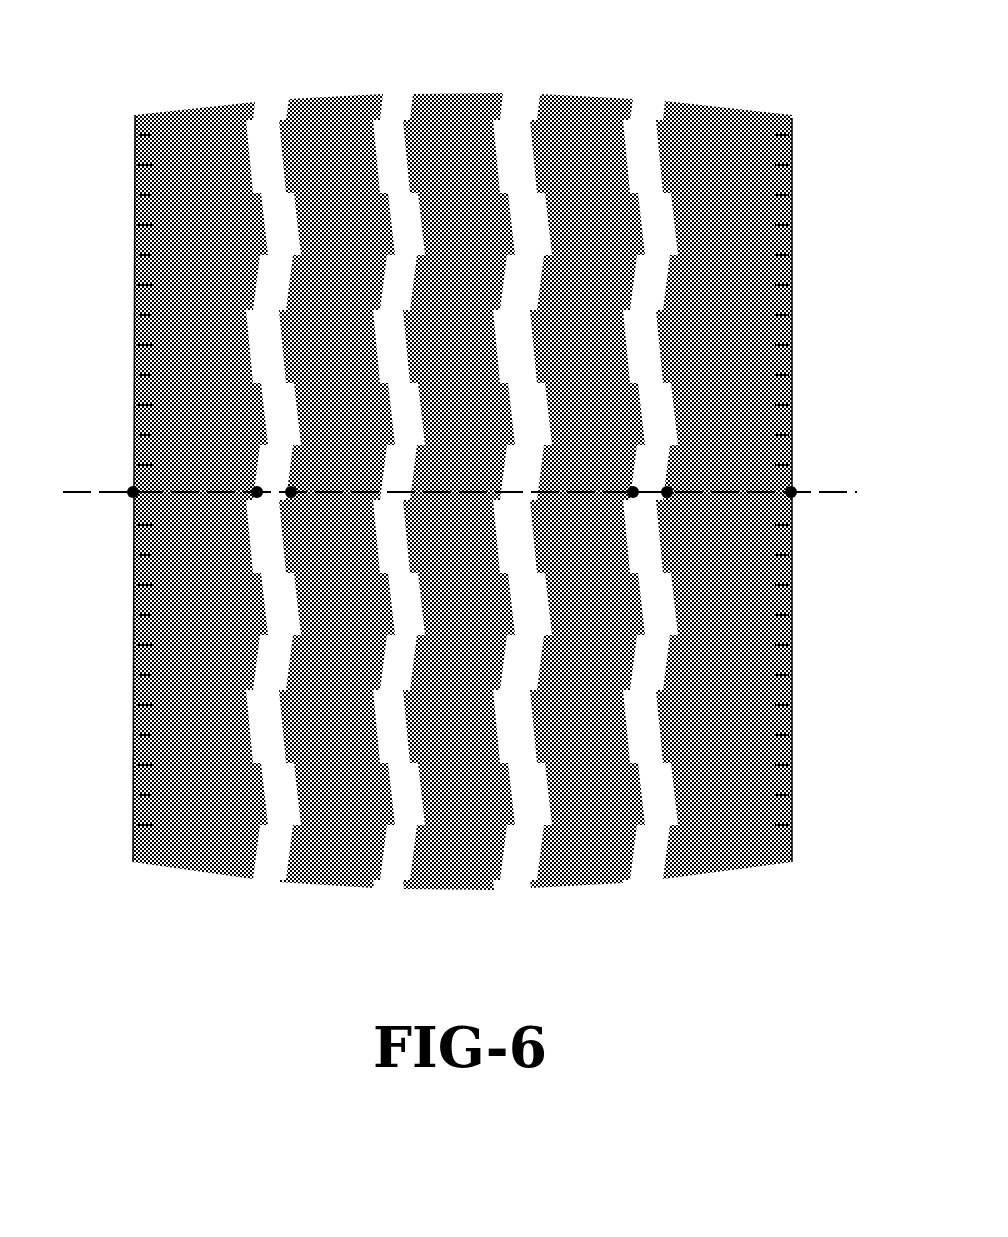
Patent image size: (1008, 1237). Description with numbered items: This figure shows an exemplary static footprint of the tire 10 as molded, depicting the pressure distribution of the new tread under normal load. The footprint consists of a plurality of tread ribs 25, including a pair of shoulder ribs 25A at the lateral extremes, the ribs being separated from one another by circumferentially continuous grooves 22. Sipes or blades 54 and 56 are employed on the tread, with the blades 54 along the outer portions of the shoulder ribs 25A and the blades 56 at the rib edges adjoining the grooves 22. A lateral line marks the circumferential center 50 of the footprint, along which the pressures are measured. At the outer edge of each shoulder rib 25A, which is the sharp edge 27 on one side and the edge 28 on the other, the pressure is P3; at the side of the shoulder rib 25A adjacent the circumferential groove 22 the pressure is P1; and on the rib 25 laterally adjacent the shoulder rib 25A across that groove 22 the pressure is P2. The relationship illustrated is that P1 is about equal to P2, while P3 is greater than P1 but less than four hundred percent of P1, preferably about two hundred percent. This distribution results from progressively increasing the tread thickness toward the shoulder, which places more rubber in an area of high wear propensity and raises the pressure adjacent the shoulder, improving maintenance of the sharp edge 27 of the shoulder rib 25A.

The tire 10 is at (108, 188).
The circumferentially continuous grooves 22 is at (265, 125).
The tread ribs 25 is at (330, 110).
The shoulder ribs 25A is at (191, 130).
The sharp edge 27 is at (792, 280).
The edge 28 is at (138, 274).
The circumferential center 50 is at (845, 497).
The sipes or blades 54 is at (140, 767).
The sipes or blades 56 is at (302, 828).
The pressure P1 is at (834, 381).
The pressure P2 is at (830, 606).
The pressure P3 is at (868, 452).